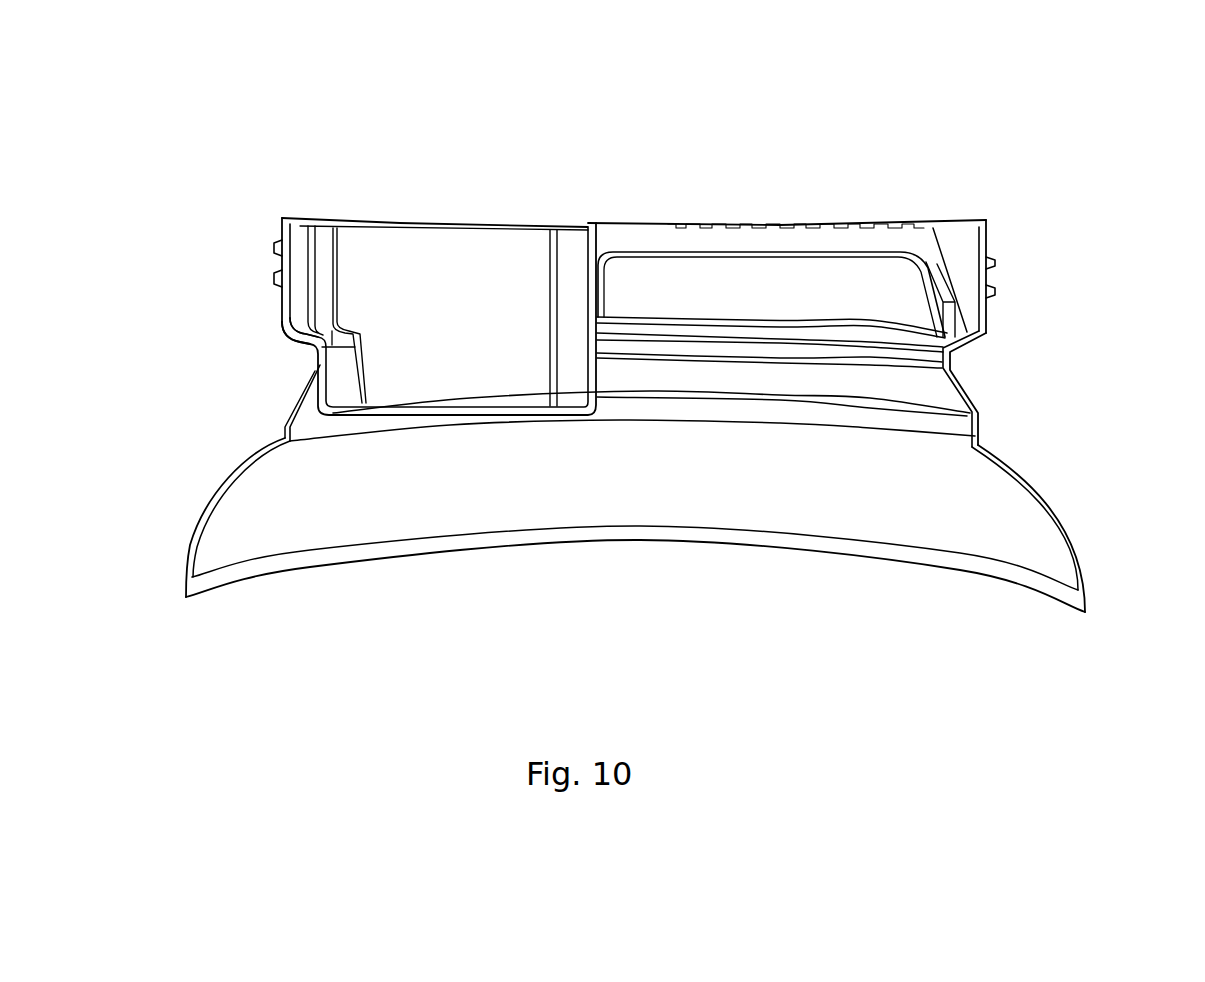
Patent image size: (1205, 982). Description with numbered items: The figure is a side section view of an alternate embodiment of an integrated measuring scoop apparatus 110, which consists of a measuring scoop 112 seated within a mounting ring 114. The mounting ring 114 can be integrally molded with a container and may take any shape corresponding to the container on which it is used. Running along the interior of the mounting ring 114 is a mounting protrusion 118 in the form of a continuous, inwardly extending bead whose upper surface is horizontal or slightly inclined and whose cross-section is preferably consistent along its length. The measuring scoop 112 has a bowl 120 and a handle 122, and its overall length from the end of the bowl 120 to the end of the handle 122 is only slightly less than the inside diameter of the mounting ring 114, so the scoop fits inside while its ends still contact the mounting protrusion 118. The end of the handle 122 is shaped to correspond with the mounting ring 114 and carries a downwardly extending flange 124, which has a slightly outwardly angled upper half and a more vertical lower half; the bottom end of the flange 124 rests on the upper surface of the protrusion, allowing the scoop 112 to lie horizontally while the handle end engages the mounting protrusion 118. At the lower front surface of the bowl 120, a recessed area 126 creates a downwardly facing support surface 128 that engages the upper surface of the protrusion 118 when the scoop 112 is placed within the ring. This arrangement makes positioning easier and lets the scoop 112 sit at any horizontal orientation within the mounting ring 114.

The integrated measuring scoop apparatus 110 is at (1057, 166).
The measuring scoop 112 is at (613, 238).
The mounting ring 114 is at (1022, 463).
The mounting protrusion 118 is at (940, 358).
The bowl 120 is at (435, 268).
The handle 122 is at (790, 237).
The downwardly extending flange 124 is at (958, 272).
The recessed area 126 is at (320, 370).
The downwardly facing support surface 128 is at (316, 347).